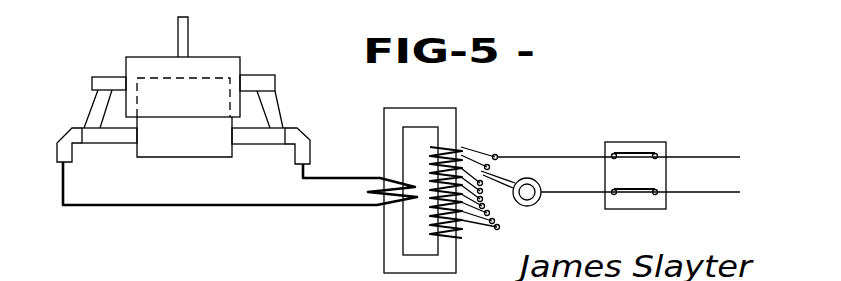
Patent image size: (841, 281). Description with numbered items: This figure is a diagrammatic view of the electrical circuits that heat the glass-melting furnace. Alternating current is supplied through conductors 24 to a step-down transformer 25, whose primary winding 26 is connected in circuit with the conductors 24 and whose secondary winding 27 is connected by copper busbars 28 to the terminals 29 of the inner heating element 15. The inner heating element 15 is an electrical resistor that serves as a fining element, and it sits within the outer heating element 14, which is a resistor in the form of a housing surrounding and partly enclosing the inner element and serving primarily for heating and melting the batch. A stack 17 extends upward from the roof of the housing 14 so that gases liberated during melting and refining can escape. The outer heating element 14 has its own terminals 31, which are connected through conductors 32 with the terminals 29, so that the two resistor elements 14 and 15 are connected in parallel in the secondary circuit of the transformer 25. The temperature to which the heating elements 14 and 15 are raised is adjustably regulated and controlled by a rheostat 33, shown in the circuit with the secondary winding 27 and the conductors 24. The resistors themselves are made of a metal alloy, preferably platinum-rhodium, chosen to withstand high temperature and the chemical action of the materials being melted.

The outer heating element 14 is at (211, 62).
The inner heating element 15 is at (177, 130).
The stack 17 is at (186, 27).
The conductors 24 is at (697, 192).
The step-down transformer 25 is at (437, 110).
The primary winding 26 is at (458, 140).
The secondary winding 27 is at (377, 208).
The copper busbars 28 is at (65, 128).
The terminals 29 is at (102, 142).
The terminals 31 is at (103, 77).
The conductors 32 is at (97, 102).
The rheostat 33 is at (510, 190).